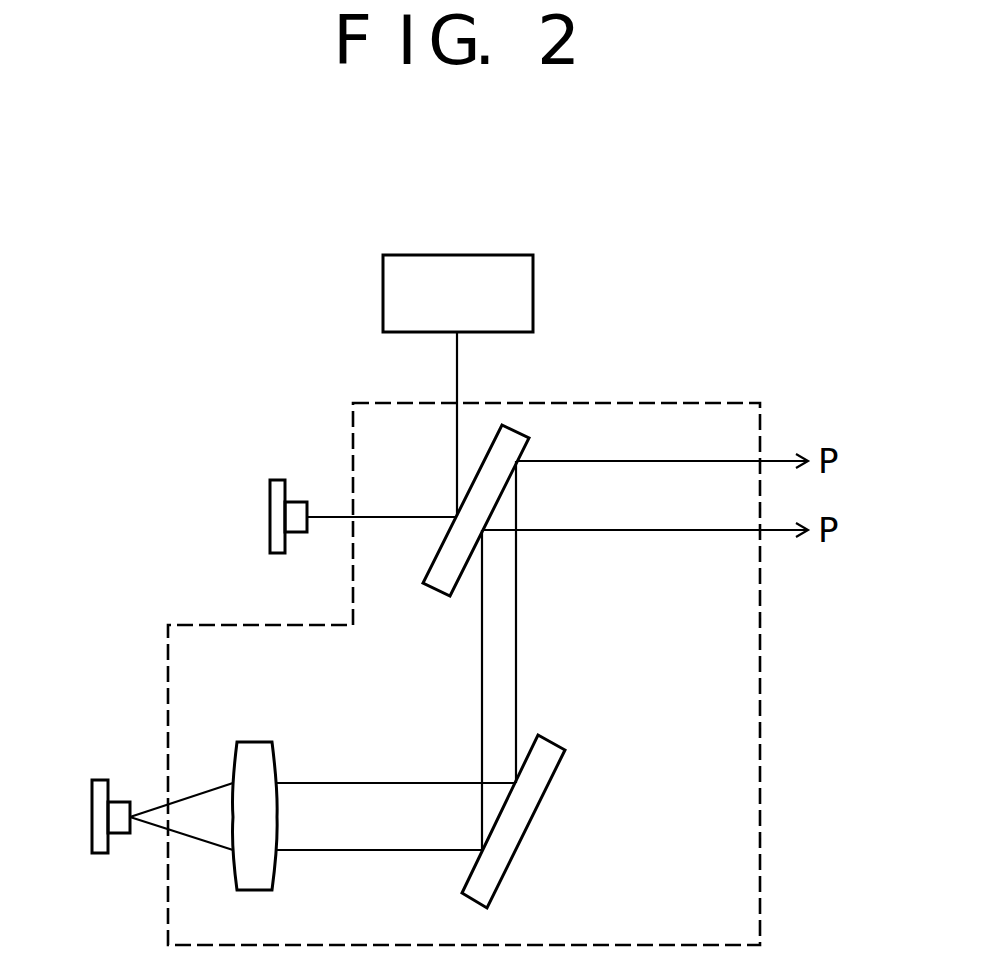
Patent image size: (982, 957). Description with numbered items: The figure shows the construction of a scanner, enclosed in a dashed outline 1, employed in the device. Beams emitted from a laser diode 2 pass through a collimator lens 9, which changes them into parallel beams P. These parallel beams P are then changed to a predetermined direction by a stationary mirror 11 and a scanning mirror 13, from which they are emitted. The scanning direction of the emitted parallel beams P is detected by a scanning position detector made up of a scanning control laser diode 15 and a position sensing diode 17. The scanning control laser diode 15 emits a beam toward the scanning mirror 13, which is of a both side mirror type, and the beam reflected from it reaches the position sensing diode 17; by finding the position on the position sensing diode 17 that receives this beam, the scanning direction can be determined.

The optical unit 1 is at (692, 412).
The laser diode 2 is at (92, 826).
The collimator lens 9 is at (262, 742).
The stationary mirror 11 is at (535, 810).
The scanning mirror 13 is at (438, 582).
The scanning control laser diode 15 is at (270, 510).
The position sensing diode (PSD) 17 is at (470, 255).